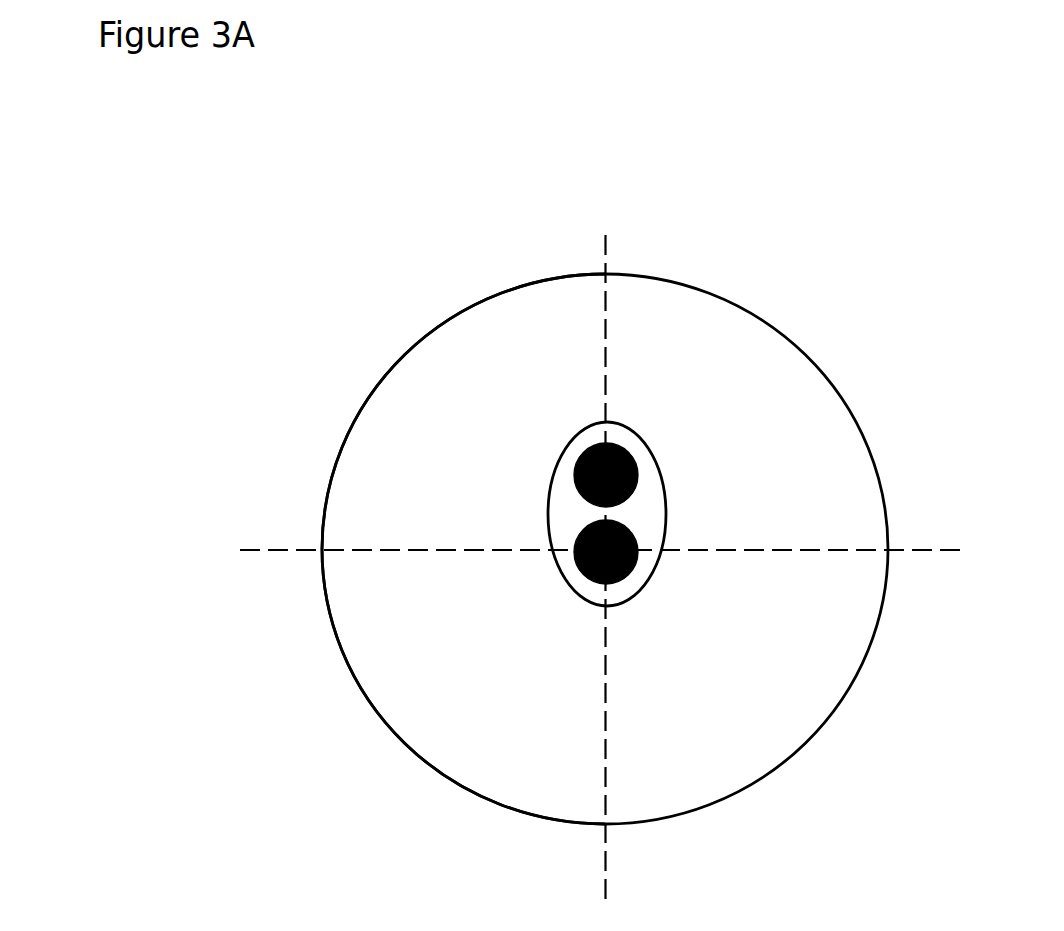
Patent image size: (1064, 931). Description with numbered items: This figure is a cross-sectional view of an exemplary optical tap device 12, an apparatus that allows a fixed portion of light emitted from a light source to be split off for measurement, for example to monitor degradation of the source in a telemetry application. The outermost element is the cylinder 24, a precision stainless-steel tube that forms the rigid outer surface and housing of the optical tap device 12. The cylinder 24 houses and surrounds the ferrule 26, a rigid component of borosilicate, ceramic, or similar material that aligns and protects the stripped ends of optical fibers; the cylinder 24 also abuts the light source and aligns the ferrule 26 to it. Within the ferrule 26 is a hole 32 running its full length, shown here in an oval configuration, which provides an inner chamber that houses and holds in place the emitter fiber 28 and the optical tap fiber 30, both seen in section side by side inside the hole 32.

The optical tap device 12 is at (432, 317).
The cylinder 24 is at (387, 730).
The ferrule 26 is at (397, 448).
The emitter fiber 28 is at (633, 570).
The optical tap fiber 30 is at (628, 500).
The hole 32 is at (645, 445).